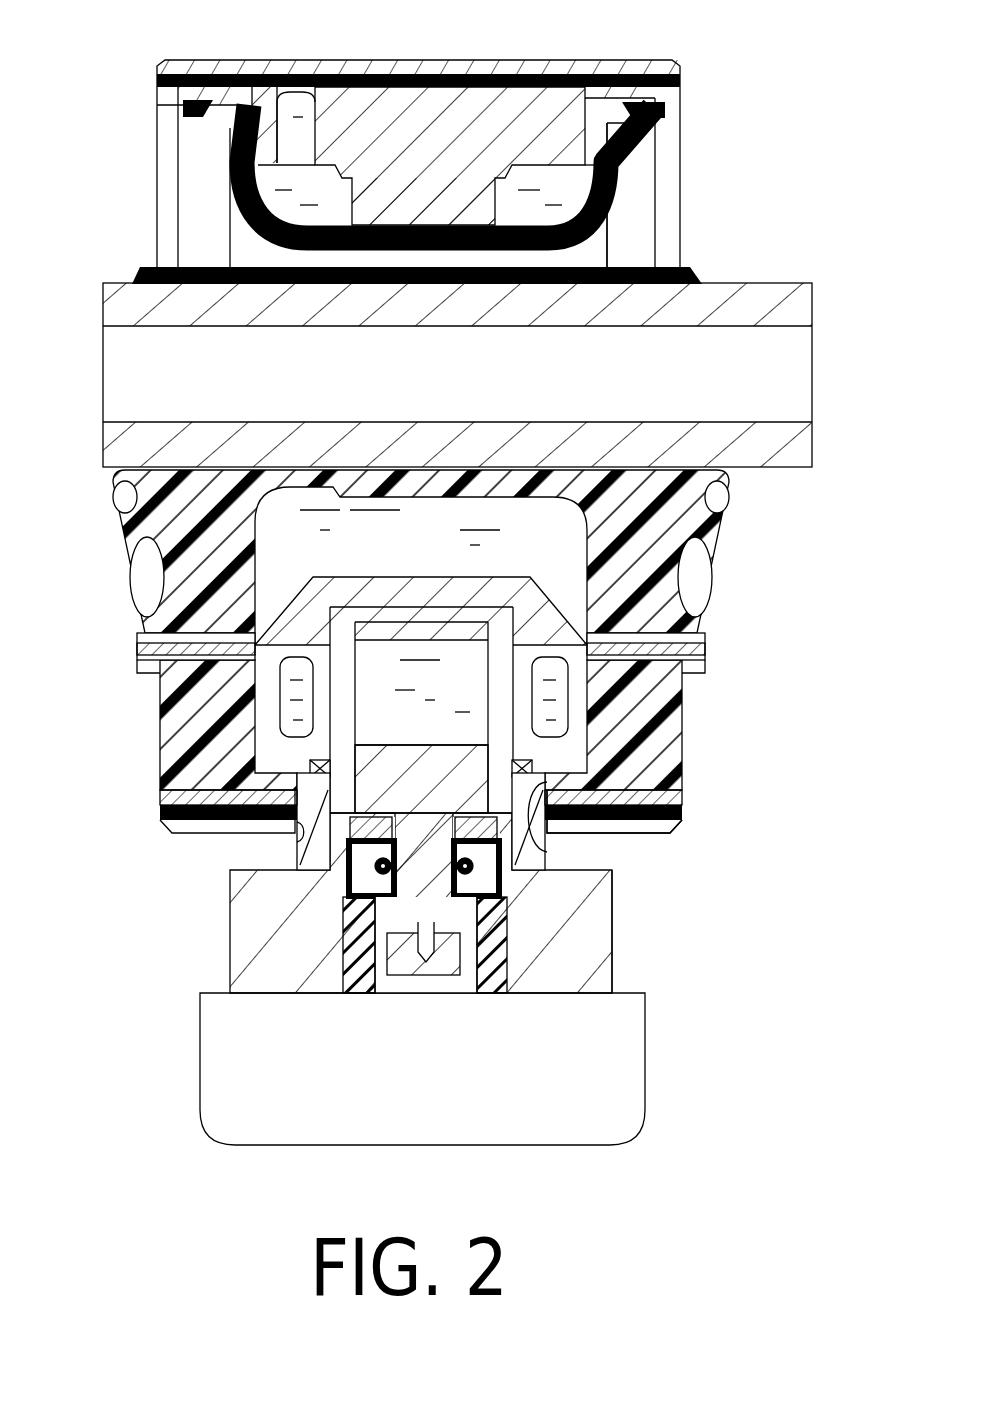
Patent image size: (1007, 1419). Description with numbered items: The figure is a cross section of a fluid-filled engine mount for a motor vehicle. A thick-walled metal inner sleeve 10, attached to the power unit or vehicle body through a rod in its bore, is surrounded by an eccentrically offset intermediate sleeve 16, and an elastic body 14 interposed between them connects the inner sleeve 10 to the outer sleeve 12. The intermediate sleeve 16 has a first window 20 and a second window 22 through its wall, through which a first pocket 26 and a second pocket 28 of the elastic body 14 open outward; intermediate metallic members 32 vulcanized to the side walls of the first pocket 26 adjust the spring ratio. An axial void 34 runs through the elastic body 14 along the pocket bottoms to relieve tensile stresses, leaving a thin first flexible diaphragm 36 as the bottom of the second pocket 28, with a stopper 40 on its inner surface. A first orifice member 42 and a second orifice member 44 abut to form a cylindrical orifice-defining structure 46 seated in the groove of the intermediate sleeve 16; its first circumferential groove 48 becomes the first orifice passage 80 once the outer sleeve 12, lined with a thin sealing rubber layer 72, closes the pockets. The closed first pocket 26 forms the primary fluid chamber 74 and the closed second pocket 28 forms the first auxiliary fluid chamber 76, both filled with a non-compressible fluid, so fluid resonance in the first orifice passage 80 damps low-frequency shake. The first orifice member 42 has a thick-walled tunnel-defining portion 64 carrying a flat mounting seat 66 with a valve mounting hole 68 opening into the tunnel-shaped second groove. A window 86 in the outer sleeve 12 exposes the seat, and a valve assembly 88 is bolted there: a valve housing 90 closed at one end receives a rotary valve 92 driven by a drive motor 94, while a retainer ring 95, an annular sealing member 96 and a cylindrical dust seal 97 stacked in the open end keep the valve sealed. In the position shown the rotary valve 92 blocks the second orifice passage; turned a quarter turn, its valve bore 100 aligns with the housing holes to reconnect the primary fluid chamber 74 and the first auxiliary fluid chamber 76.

The inner sleeve 10 is at (752, 297).
The outer sleeve 12 is at (503, 65).
The elastic body 14 is at (637, 565).
The intermediate sleeve 16 is at (205, 92).
The first window 20 is at (260, 775).
The second window 22 is at (587, 93).
The first pocket 26 is at (273, 540).
The second pocket 28 is at (560, 195).
The intermediate metallic members 32 is at (143, 657).
The axial void 34 is at (320, 257).
The first flexible diaphragm 36 is at (305, 230).
The stopper 40 is at (385, 217).
The first orifice member 42 is at (567, 760).
The second orifice member 44 is at (455, 103).
The orifice-defining structure 46 is at (225, 137).
The first circumferential groove 48 is at (297, 97).
The thick-walled tunnel-defining portion 64 is at (659, 815).
The mounting seat 66 is at (535, 840).
The valve mounting hole 68 is at (514, 688).
The sealing rubber layer 72 is at (335, 77).
The primary fluid chamber 74 is at (567, 543).
The first auxiliary fluid chamber 76 is at (537, 183).
The first orifice passage 80 is at (560, 728).
The window 86 is at (345, 838).
The valve assembly 88 is at (618, 952).
The valve housing 90 is at (593, 900).
The rotary valve 92 is at (372, 760).
The drive motor 94 is at (366, 1115).
The retainer ring 95 is at (300, 857).
The annular sealing member 96 is at (350, 885).
The cylindrical dust seal 97 is at (360, 958).
The valve bore 100 is at (372, 652).